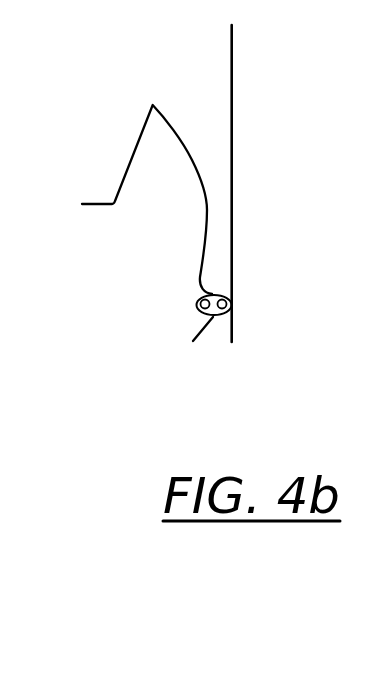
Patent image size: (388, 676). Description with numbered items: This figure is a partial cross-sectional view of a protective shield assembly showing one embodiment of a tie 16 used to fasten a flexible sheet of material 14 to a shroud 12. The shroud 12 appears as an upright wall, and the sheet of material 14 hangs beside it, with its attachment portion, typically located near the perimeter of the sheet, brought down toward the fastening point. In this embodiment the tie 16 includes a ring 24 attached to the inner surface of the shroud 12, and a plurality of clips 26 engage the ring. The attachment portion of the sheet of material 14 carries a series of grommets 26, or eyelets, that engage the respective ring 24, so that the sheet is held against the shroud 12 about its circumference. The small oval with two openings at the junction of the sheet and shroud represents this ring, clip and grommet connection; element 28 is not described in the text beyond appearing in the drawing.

The shroud 12 is at (234, 164).
The sheet of material 14 is at (127, 167).
The tie 16 is at (252, 302).
The ring 24 is at (230, 307).
The clips 26 is at (229, 287).
The left hole 28 is at (200, 303).